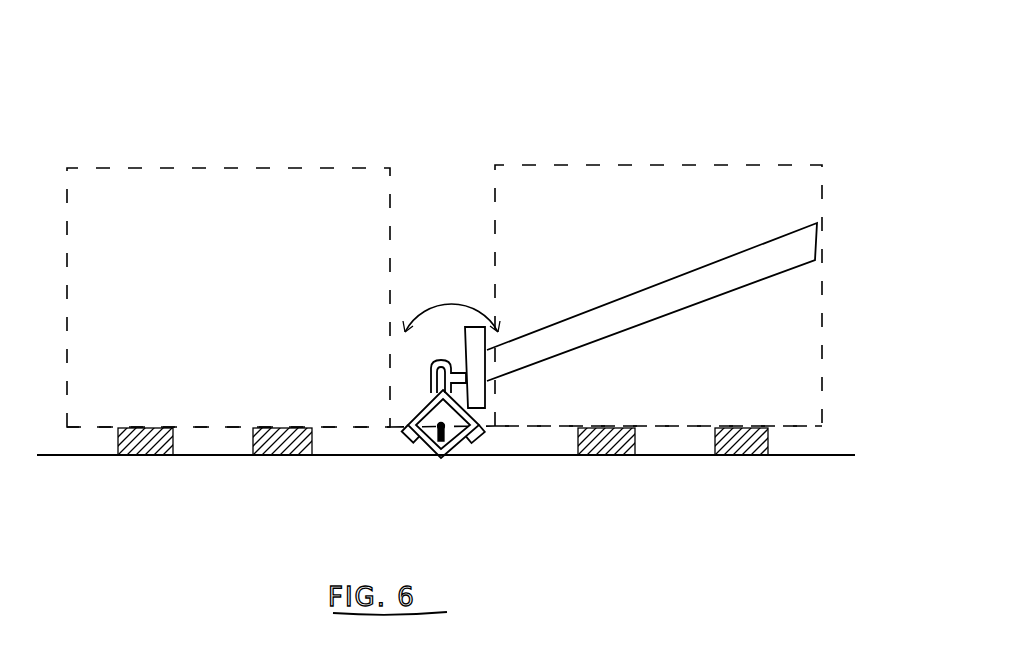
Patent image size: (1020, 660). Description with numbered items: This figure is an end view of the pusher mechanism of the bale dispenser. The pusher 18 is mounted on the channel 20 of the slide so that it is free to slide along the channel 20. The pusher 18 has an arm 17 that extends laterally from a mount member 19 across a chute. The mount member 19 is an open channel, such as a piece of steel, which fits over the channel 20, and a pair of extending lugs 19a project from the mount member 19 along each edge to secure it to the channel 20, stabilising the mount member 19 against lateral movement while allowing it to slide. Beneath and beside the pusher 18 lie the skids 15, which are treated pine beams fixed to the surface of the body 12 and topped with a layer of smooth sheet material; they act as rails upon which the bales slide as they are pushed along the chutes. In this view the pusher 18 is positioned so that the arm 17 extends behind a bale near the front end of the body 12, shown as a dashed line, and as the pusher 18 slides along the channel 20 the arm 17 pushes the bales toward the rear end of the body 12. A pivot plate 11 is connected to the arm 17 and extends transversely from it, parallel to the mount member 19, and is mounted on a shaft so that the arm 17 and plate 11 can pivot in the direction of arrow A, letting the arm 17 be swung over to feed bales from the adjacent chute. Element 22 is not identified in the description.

The pivot plate 11 is at (477, 335).
The body 12 is at (825, 453).
The skids 15 is at (133, 454).
The arm 17 is at (702, 277).
The pusher 18 is at (449, 305).
The mount member 19 is at (412, 403).
The extending lugs 19a is at (405, 448).
The channel 20 is at (430, 457).
The hook bracket 22 is at (486, 408).